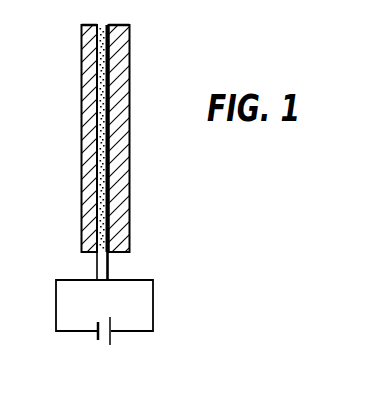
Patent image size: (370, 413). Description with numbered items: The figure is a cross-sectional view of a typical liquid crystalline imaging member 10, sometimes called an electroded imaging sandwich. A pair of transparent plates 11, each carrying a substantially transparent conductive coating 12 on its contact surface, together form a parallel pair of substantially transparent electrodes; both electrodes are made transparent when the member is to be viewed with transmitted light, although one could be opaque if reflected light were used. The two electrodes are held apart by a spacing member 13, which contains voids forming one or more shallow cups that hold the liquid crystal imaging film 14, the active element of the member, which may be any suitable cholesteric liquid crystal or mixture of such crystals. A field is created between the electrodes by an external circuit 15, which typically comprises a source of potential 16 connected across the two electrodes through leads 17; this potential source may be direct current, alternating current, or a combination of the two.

The liquid crystalline imaging member 10 is at (112, 141).
The transparent plates 11 is at (82, 43).
The transparent conductive coating 12 is at (88, 24).
The spacing member 13 is at (84, 224).
The liquid crystal imaging film 14 is at (97, 141).
The external circuit 15 is at (187, 315).
The source of potential 16 is at (111, 340).
The leads 17 is at (97, 262).